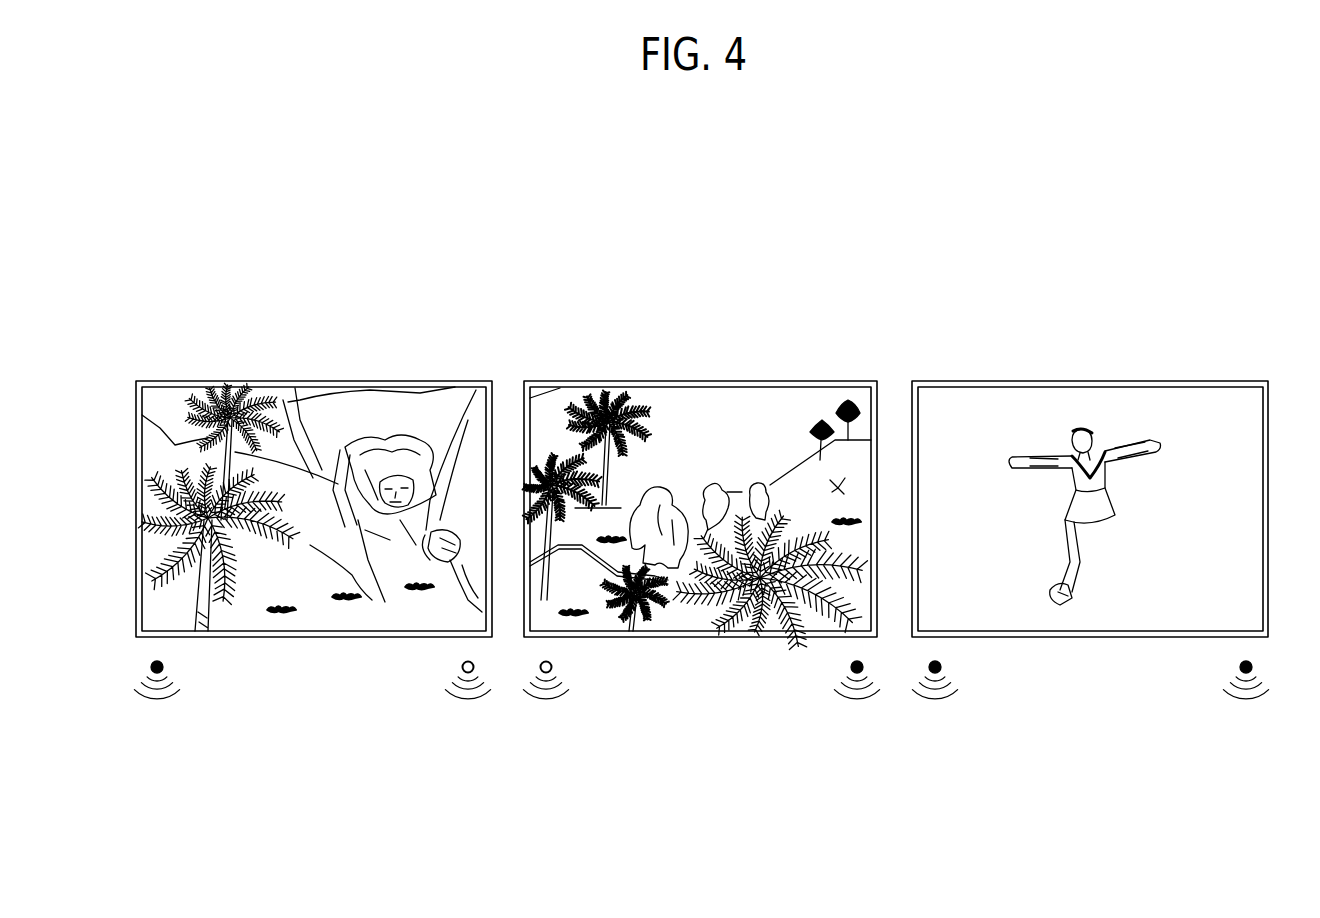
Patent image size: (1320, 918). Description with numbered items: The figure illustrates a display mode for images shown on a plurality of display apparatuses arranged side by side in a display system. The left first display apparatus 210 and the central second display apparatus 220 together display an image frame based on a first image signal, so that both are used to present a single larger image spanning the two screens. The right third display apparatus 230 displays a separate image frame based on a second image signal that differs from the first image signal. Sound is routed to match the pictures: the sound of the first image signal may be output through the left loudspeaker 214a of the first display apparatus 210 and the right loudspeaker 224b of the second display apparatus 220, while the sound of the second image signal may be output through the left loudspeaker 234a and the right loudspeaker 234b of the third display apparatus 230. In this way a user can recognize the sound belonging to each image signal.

The first display apparatus 210 is at (312, 359).
The second display apparatus 220 is at (700, 359).
The third display apparatus 230 is at (1089, 359).
The left loudspeaker of the first display apparatus 214a is at (157, 716).
The right loudspeaker of the second display apparatus 224b is at (857, 716).
The left loudspeaker of the third display apparatus 234a is at (935, 716).
The right loudspeaker of the third display apparatus 234b is at (1246, 716).